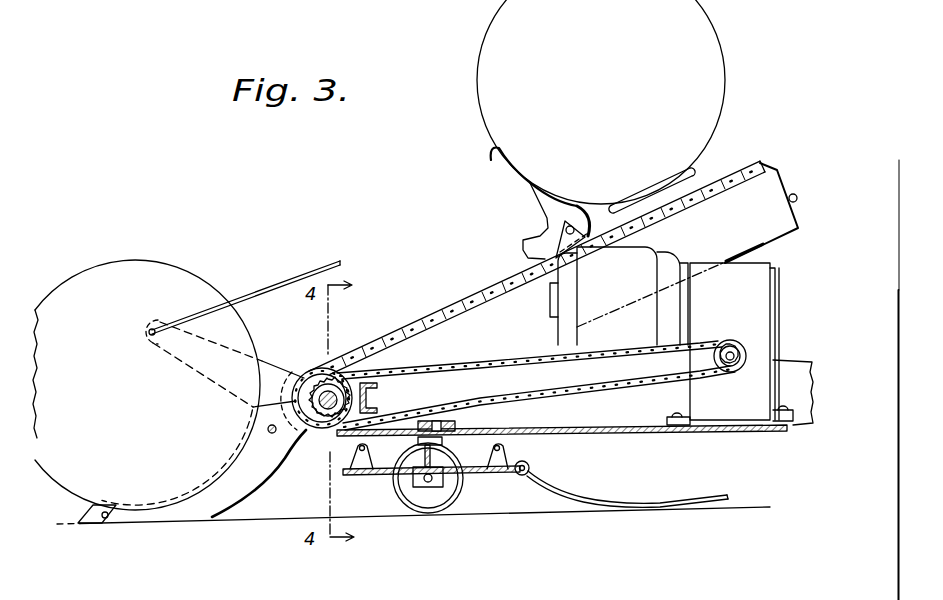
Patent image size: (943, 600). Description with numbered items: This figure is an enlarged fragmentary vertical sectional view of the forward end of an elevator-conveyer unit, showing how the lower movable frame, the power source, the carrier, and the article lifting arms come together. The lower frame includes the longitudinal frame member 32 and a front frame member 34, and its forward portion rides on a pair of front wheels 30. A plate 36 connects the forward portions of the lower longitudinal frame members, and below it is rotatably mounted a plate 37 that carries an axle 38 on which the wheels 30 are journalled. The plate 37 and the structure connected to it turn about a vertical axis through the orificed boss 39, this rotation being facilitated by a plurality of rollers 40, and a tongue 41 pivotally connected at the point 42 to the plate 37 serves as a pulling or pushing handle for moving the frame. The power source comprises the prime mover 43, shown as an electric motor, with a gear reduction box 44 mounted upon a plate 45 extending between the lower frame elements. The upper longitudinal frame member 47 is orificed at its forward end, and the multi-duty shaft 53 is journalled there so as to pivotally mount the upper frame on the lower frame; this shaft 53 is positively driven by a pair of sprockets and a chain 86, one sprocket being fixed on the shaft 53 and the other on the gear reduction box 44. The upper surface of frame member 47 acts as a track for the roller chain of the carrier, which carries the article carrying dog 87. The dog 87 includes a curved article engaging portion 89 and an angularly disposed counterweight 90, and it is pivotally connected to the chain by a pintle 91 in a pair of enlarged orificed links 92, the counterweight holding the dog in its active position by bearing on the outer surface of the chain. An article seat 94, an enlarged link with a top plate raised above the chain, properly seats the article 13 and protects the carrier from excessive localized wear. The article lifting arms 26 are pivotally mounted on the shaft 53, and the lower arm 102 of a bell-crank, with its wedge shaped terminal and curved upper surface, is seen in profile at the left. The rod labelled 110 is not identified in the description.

The article 13 is at (713, 78).
The article lifting arms 26 is at (207, 511).
The front wheels 30 is at (450, 507).
The longitudinal frame member 32 is at (790, 360).
The front frame member 34 is at (378, 397).
The plate 36 is at (500, 430).
The plate 37 is at (482, 474).
The axle 38 is at (424, 480).
The orificed boss 39 is at (456, 426).
The rollers 40 is at (352, 450).
The tongue 41 is at (596, 502).
The pivot point 42 is at (531, 467).
The prime mover 43 is at (652, 248).
The gear reduction box 44 is at (742, 293).
The plate 45 is at (715, 428).
The upper longitudinal frame member 47 is at (776, 239).
The multi-duty shaft 53 is at (331, 396).
The chain 86 is at (594, 383).
The article carrying dog 87 is at (534, 207).
The article engaging portion 89 is at (493, 167).
The counterweight 90 is at (523, 245).
The pintle 91 is at (572, 224).
The enlarged orificed links 92 is at (581, 230).
The article seat 94 is at (660, 181).
The lower arm of bell-crank 102 is at (247, 490).
The arm 110 is at (222, 357).